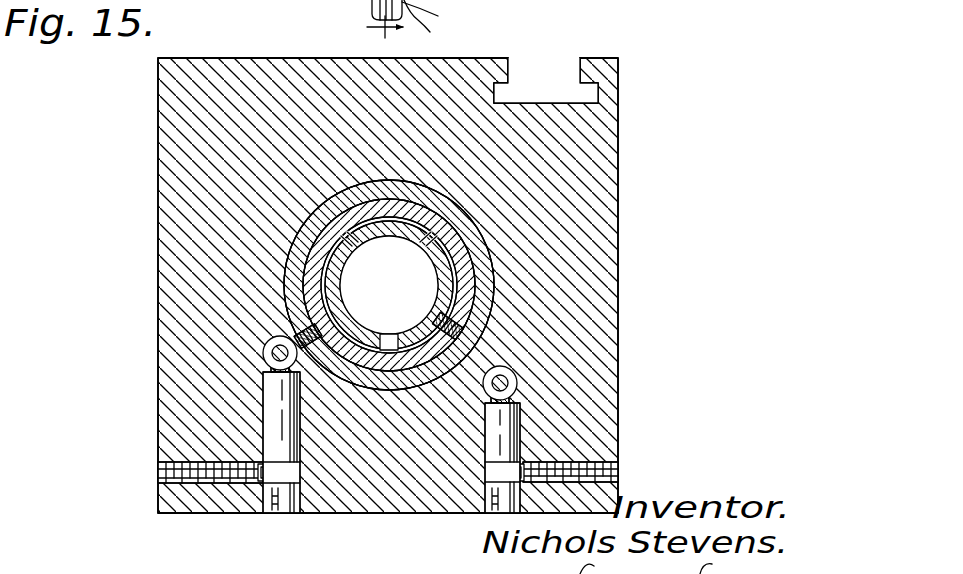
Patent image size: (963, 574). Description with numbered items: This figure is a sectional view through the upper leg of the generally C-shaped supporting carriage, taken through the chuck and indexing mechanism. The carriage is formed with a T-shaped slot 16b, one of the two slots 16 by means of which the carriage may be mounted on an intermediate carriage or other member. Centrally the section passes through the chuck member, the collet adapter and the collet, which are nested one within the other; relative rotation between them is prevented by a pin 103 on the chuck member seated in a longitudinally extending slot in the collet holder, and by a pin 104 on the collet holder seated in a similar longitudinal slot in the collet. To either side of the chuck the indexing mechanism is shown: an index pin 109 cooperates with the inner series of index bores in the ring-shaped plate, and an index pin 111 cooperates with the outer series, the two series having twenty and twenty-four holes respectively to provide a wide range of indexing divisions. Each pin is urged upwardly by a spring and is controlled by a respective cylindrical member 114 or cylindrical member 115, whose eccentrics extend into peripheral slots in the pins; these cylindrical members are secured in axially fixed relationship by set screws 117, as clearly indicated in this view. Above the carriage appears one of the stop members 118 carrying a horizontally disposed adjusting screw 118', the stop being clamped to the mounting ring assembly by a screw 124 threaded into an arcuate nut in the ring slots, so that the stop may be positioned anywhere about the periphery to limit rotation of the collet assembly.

The T-shaped slot 16 is at (371, 27).
The T-shaped slot 16b is at (578, 74).
The pin 103 is at (341, 301).
The pin 104 is at (450, 314).
The index pin 109 is at (263, 352).
The index pin 111 is at (517, 381).
The cylindrical member 114 is at (272, 413).
The cylindrical member 115 is at (510, 433).
The set screw 117 is at (243, 484).
The stop member 118 is at (435, 22).
The adjusting screw 118' is at (440, 14).
The screw 124 is at (372, 6).